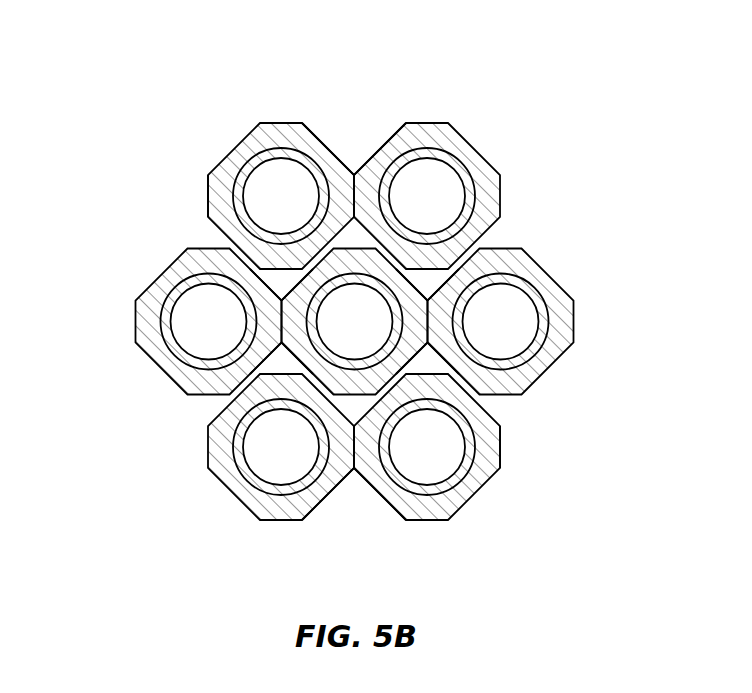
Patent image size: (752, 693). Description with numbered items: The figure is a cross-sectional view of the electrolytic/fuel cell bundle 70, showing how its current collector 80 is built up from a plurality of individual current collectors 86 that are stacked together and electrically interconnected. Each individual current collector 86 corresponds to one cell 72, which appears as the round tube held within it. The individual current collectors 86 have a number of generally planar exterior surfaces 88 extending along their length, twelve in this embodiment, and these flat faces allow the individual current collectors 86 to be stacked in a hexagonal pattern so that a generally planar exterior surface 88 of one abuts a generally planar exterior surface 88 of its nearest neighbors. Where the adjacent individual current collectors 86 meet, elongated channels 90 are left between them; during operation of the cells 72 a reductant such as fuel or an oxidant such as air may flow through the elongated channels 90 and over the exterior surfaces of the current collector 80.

The electrolytic/fuel cell bundle 70 is at (143, 95).
The cell 72 is at (289, 149).
The current collector 80 is at (481, 126).
The individual current collector 86 is at (228, 146).
The generally planar exterior surface 88 is at (208, 192).
The elongated channel 90 is at (355, 176).